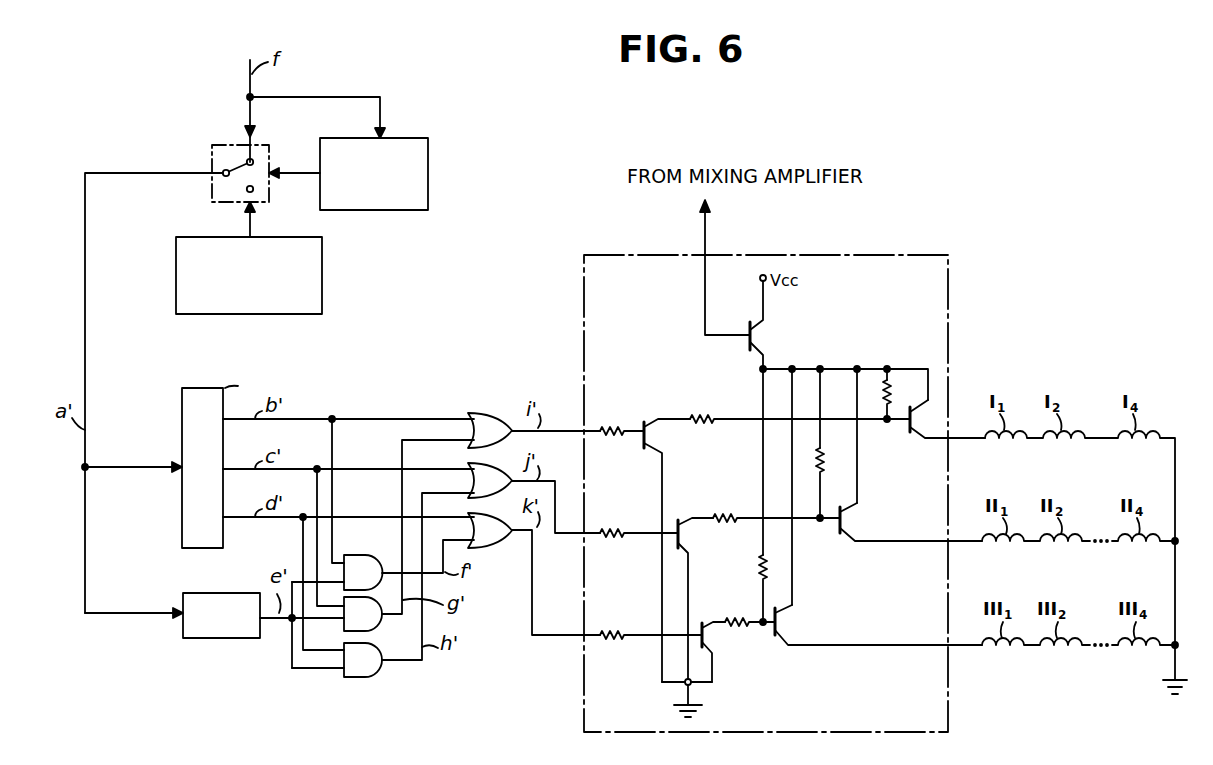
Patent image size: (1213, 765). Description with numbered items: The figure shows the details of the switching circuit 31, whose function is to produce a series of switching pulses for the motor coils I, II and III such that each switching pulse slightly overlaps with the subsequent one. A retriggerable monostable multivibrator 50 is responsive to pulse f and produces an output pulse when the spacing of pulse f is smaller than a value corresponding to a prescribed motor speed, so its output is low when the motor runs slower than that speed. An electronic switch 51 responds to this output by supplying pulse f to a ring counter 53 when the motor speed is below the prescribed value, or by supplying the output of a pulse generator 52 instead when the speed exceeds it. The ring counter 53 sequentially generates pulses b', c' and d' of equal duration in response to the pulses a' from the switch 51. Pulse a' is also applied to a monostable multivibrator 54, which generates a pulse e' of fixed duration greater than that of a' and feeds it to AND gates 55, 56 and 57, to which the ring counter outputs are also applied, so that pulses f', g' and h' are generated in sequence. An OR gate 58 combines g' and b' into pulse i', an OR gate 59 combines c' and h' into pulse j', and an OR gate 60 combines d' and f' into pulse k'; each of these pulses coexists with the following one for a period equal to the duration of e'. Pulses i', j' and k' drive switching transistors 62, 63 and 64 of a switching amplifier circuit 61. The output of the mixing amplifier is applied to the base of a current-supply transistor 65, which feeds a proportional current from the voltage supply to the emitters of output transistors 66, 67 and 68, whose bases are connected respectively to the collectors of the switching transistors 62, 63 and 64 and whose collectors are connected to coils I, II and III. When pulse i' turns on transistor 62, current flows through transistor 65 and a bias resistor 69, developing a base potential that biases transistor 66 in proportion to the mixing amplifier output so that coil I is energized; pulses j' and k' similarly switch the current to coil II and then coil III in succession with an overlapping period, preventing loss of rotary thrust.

The switching circuit 31 is at (555, 108).
The retriggerable monostable multivibrator 50 is at (428, 170).
The electronic switch 51 is at (212, 158).
The pulse generator 52 is at (324, 260).
The ring counter 53 is at (182, 418).
The monostable multivibrator 54 is at (212, 593).
The AND gate 55 is at (381, 557).
The AND gate 56 is at (378, 631).
The AND gate 57 is at (380, 678).
The OR gate 58 is at (489, 412).
The OR gate 59 is at (470, 464).
The OR gate 60 is at (486, 548).
The switching amplifier circuit 61 is at (950, 325).
The switching transistor 62 is at (643, 421).
The switching transistor 63 is at (680, 521).
The switching transistor 64 is at (703, 623).
The current-supply transistor 65 is at (750, 330).
The output transistor 66 is at (914, 442).
The output transistor 67 is at (840, 535).
The output transistor 68 is at (779, 647).
The bias resistor 69 is at (887, 395).